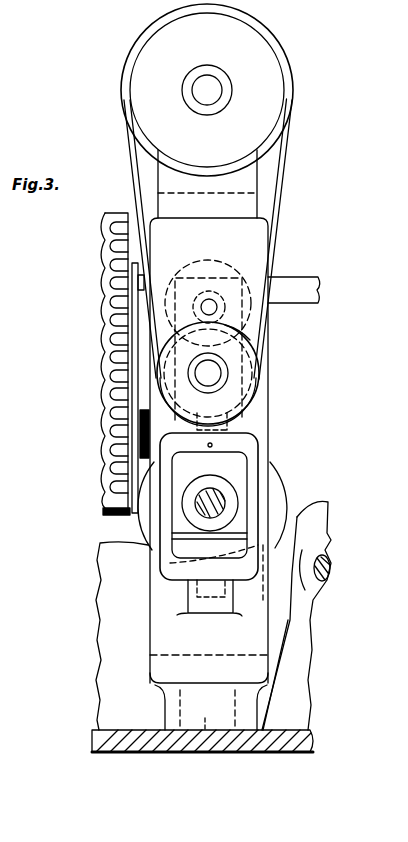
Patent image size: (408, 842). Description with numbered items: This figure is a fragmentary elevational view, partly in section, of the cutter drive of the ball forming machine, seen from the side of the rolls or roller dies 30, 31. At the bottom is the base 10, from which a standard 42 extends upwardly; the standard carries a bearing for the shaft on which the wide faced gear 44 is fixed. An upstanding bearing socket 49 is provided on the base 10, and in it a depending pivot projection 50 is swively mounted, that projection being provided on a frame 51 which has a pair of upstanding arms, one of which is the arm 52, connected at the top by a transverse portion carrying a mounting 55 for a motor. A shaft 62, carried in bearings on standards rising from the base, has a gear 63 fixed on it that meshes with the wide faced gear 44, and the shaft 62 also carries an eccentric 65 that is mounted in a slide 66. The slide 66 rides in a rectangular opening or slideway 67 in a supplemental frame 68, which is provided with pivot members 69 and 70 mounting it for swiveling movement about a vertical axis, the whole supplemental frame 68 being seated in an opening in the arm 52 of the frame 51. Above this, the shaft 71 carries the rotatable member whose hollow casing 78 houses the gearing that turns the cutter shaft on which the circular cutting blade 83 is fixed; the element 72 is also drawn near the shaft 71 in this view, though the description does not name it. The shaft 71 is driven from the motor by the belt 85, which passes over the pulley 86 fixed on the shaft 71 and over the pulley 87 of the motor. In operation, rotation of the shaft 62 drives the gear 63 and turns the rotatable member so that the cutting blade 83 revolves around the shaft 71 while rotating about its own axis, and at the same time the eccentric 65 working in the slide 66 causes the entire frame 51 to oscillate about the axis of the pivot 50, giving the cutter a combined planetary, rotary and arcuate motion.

The base 10 is at (190, 748).
The roller die 30 is at (110, 415).
The roller die 31 is at (110, 290).
The standard 42 is at (288, 690).
The wide faced gear 44 is at (300, 517).
The bearing socket 49 is at (168, 712).
The pivot projection 50 is at (208, 745).
The frame 51 is at (178, 630).
The upstanding arm 52 is at (170, 250).
The motor mounting 55 is at (236, 190).
The shaft 62 is at (220, 500).
The gear 63 is at (275, 497).
The eccentric 65 is at (187, 487).
The slide 66 is at (182, 525).
The slideway 67 is at (170, 540).
The supplemental frame 68 is at (250, 457).
The pivot member 69 is at (196, 592).
The pivot member 70 is at (243, 420).
The shaft 71 is at (210, 373).
The pulley shaft 72 is at (222, 357).
The hollow casing 78 is at (190, 285).
The circular cutting blade 83 is at (272, 262).
The belt 85 is at (270, 240).
The pulley 86 is at (250, 382).
The pulley 87 is at (258, 75).